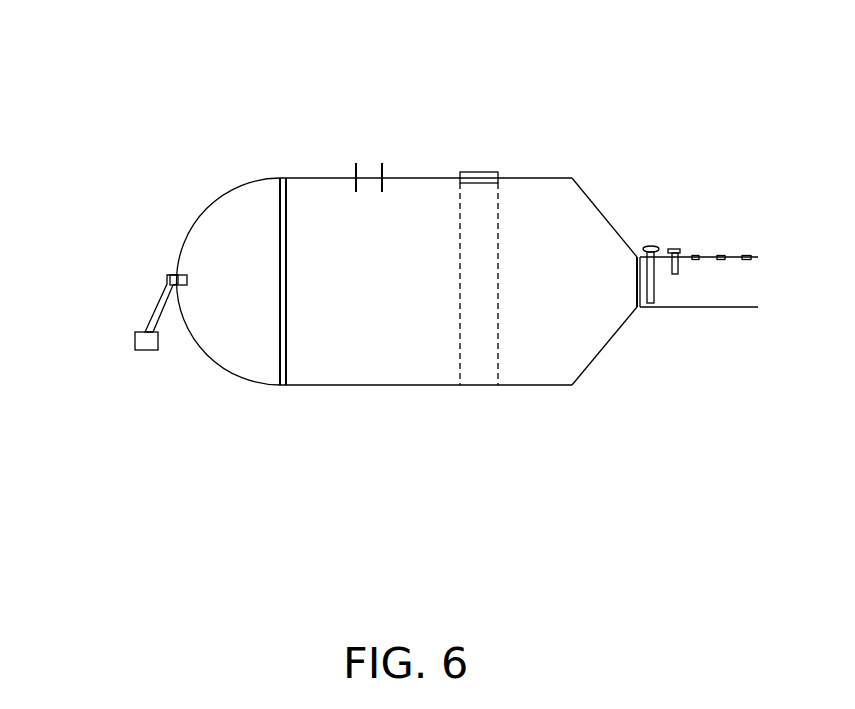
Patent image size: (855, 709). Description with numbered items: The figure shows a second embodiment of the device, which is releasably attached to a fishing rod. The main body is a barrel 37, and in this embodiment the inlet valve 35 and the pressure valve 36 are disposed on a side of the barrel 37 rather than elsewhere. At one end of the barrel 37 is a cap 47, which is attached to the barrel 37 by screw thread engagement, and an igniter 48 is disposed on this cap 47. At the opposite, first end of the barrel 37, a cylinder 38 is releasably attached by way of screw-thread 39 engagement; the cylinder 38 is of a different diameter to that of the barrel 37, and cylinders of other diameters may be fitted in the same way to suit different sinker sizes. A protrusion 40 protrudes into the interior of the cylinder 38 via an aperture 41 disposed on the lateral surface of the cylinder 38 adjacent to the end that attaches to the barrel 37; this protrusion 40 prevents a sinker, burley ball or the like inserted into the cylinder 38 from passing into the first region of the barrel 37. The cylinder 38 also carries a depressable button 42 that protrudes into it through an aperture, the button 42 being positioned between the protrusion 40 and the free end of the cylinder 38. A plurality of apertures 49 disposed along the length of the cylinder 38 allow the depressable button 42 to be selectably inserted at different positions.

The inlet valve 35 is at (356, 160).
The pressure valve 36 is at (387, 163).
The barrel 37 is at (380, 385).
The cylinder 38 is at (712, 305).
The screw-thread 39 is at (637, 307).
The protrusion 40 is at (653, 245).
The aperture 41 is at (642, 250).
The depressable button 42 is at (678, 252).
The cap 47 is at (186, 236).
The igniter 48 is at (145, 315).
The apertures 49 is at (745, 253).